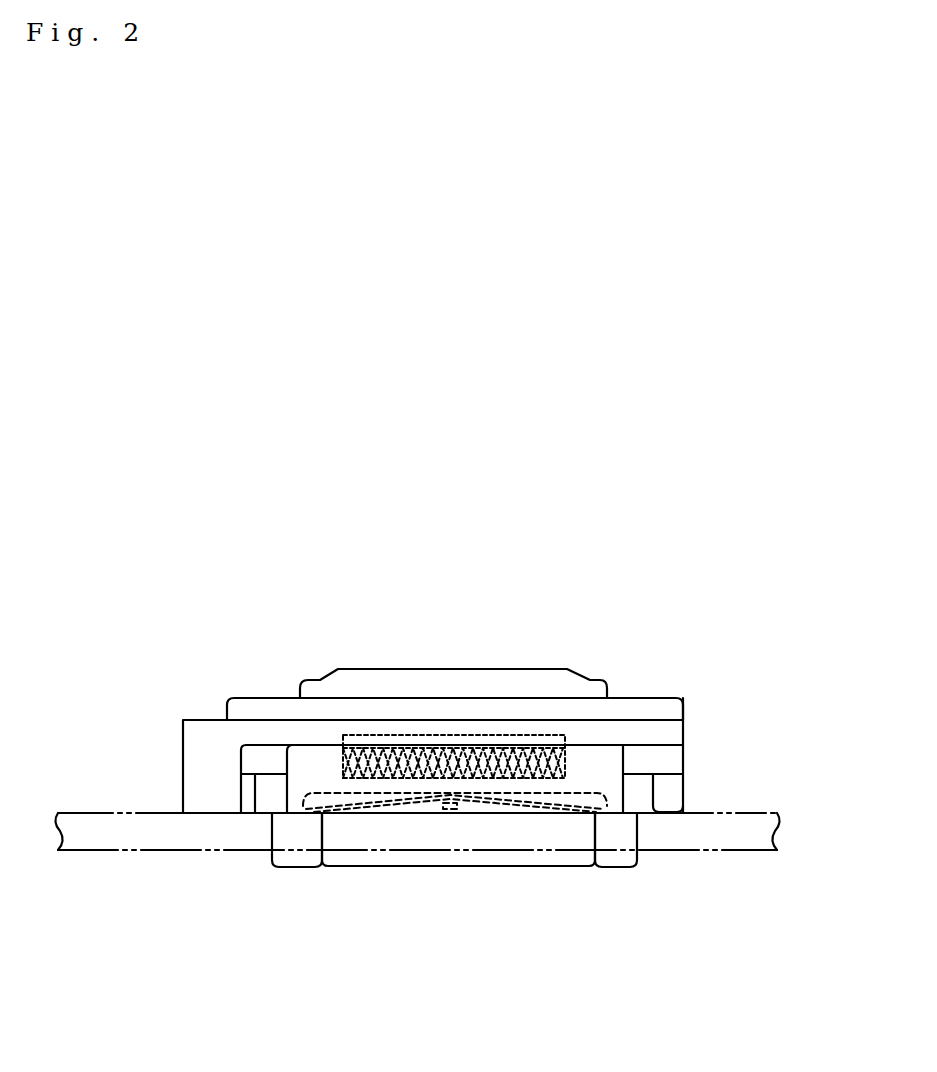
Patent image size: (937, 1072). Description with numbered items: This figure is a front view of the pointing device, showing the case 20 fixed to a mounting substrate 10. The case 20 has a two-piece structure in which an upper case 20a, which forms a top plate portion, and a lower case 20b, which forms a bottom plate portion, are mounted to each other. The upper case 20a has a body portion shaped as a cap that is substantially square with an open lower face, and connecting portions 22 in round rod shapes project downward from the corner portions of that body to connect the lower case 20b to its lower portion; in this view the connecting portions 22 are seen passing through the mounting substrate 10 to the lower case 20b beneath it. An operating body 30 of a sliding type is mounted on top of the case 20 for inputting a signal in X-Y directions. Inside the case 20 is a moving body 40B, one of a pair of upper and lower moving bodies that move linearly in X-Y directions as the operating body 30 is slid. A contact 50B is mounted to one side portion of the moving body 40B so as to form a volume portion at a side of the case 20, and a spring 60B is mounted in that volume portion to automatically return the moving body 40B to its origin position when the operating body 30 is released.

The mounting substrate 10 is at (748, 812).
The case 20 is at (657, 672).
The upper case 20a is at (657, 697).
The lower case 20b is at (450, 868).
The connecting portions 22 is at (292, 868).
The operating body 30 is at (462, 668).
The moving body 40B is at (323, 753).
The contact 50B is at (542, 793).
The spring 60B is at (515, 735).